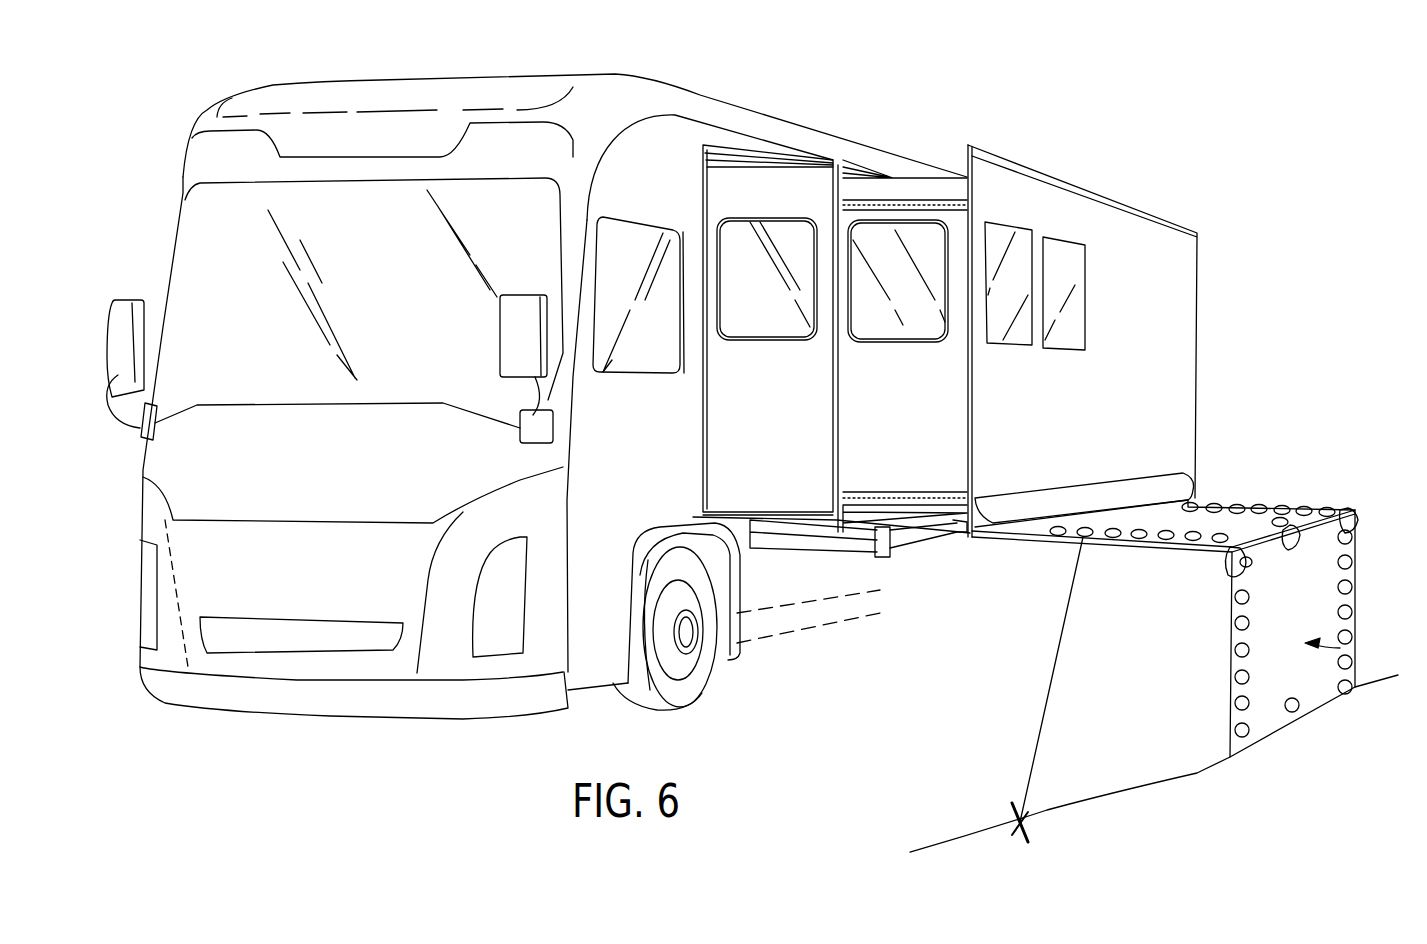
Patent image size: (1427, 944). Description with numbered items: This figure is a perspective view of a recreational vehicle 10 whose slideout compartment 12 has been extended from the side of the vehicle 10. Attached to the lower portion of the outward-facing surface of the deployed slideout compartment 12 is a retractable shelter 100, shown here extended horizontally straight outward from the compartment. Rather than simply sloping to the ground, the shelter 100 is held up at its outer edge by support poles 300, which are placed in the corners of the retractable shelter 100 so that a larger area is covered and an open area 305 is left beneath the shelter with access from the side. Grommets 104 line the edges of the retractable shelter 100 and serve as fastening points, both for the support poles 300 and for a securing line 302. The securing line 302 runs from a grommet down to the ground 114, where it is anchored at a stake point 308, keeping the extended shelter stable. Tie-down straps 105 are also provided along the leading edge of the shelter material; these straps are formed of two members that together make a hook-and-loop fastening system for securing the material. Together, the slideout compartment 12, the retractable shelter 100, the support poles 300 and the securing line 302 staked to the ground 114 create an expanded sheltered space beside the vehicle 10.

The recreational vehicle 10 is at (700, 97).
The slideout compartment 12 is at (1110, 397).
The retractable shelter 100 is at (977, 500).
The grommets 104 is at (1252, 503).
The tie-down straps 105 is at (1357, 530).
The ground 114 is at (950, 843).
The support poles 300 is at (1357, 573).
The securing line 302 is at (1055, 670).
The open area 305 is at (1340, 648).
The stake point 308 is at (1033, 825).